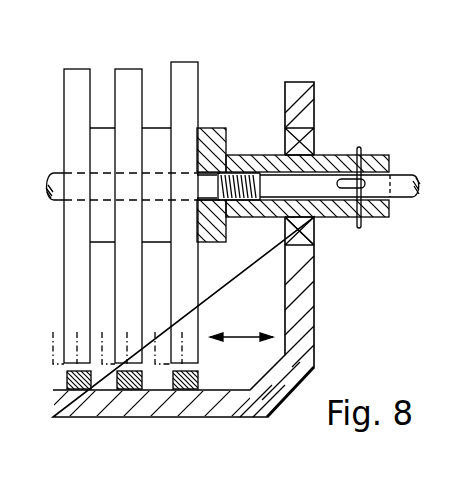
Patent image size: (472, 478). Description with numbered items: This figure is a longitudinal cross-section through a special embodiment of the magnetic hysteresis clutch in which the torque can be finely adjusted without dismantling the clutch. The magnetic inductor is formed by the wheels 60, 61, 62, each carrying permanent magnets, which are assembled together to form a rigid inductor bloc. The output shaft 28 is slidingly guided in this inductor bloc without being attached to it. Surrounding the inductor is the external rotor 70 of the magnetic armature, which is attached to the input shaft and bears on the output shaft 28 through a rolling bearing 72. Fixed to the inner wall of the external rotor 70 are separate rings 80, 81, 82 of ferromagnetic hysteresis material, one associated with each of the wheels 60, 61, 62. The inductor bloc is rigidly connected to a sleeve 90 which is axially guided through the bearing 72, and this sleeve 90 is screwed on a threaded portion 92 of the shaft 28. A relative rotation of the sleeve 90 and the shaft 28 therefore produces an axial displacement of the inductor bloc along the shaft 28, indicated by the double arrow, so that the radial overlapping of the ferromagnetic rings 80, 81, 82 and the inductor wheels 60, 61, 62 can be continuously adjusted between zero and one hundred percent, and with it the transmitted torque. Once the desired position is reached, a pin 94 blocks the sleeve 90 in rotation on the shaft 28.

The output shaft 28 is at (57, 205).
The wheel 60 is at (182, 68).
The wheel 61 is at (126, 72).
The wheel 62 is at (76, 72).
The external rotor 70 is at (300, 311).
The rolling bearing 72 is at (318, 238).
The ferromagnetic hysteresis ring 80 is at (184, 389).
The ferromagnetic hysteresis ring 81 is at (129, 389).
The ferromagnetic hysteresis ring 82 is at (75, 389).
The sleeve 90 is at (322, 156).
The threaded portion 92 is at (245, 155).
The pin 94 is at (360, 147).